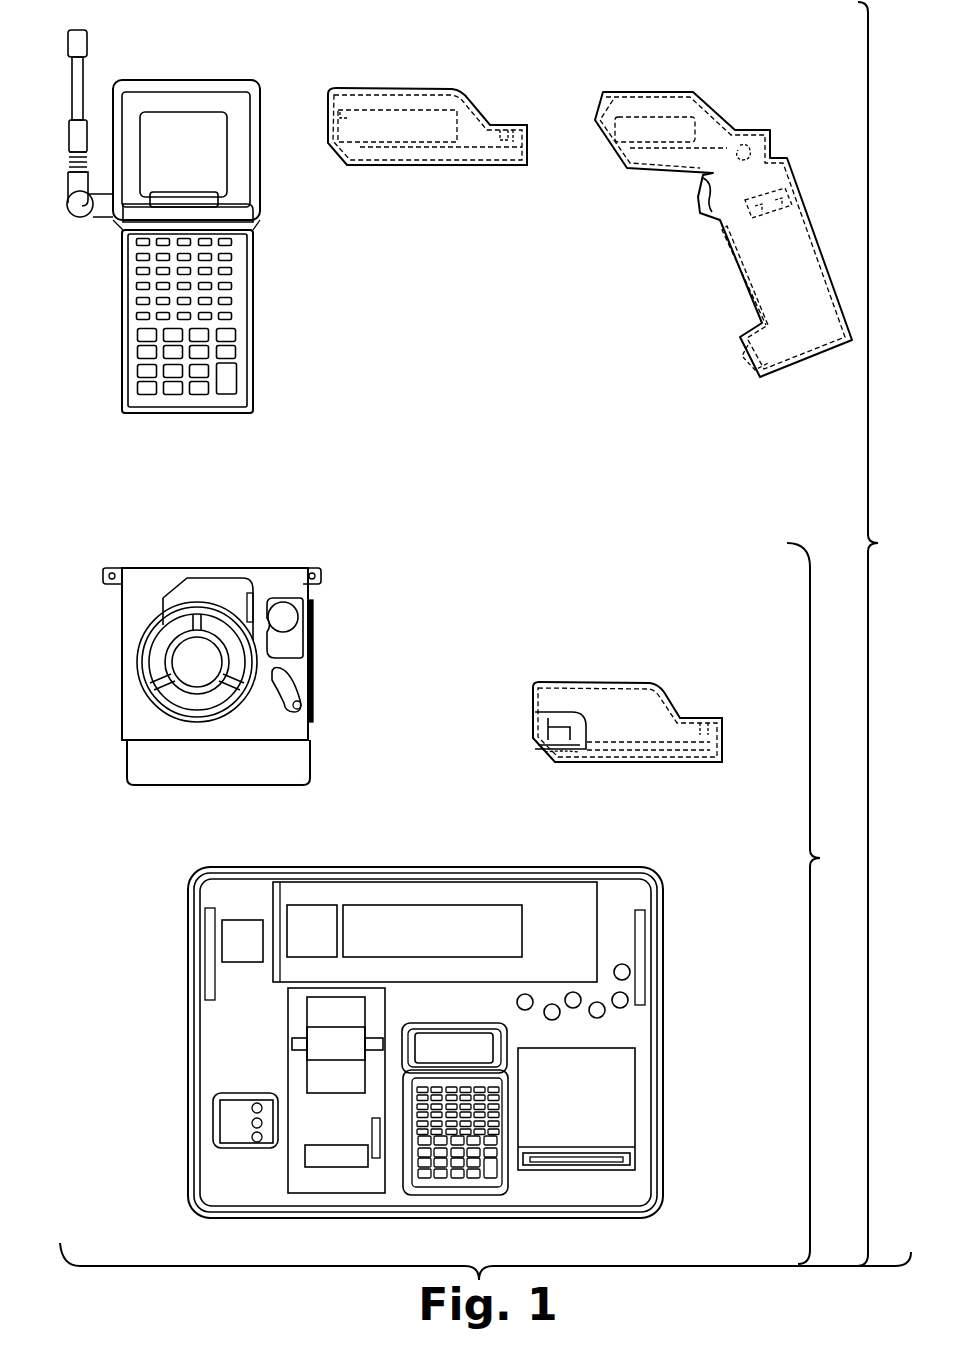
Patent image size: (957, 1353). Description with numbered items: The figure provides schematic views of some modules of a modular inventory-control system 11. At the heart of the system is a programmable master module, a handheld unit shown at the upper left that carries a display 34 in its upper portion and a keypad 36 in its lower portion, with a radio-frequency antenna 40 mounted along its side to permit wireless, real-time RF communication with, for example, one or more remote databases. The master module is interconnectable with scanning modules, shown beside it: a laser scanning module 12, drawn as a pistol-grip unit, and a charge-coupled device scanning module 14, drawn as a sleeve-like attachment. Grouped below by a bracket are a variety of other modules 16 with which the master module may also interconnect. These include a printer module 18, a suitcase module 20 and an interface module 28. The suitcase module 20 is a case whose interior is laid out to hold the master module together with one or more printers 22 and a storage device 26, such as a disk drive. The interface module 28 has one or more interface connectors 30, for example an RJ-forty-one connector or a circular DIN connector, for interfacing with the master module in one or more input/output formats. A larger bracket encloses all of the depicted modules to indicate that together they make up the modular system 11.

The modular system 11 is at (883, 634).
The laser scanning module 12 is at (660, 180).
The charge-coupled device (CCD) scanning module 14 is at (406, 86).
The other modules 16 is at (820, 903).
The printer module 18 is at (318, 664).
The suitcase module 20 is at (187, 1052).
The printer 22 is at (283, 1008).
The storage device 26 is at (592, 1157).
The interface module 28 is at (683, 709).
The interface connector 30 is at (537, 730).
The display 34 is at (193, 165).
The keypad 36 is at (144, 316).
The radio-frequency (RF) antenna 40 is at (87, 36).